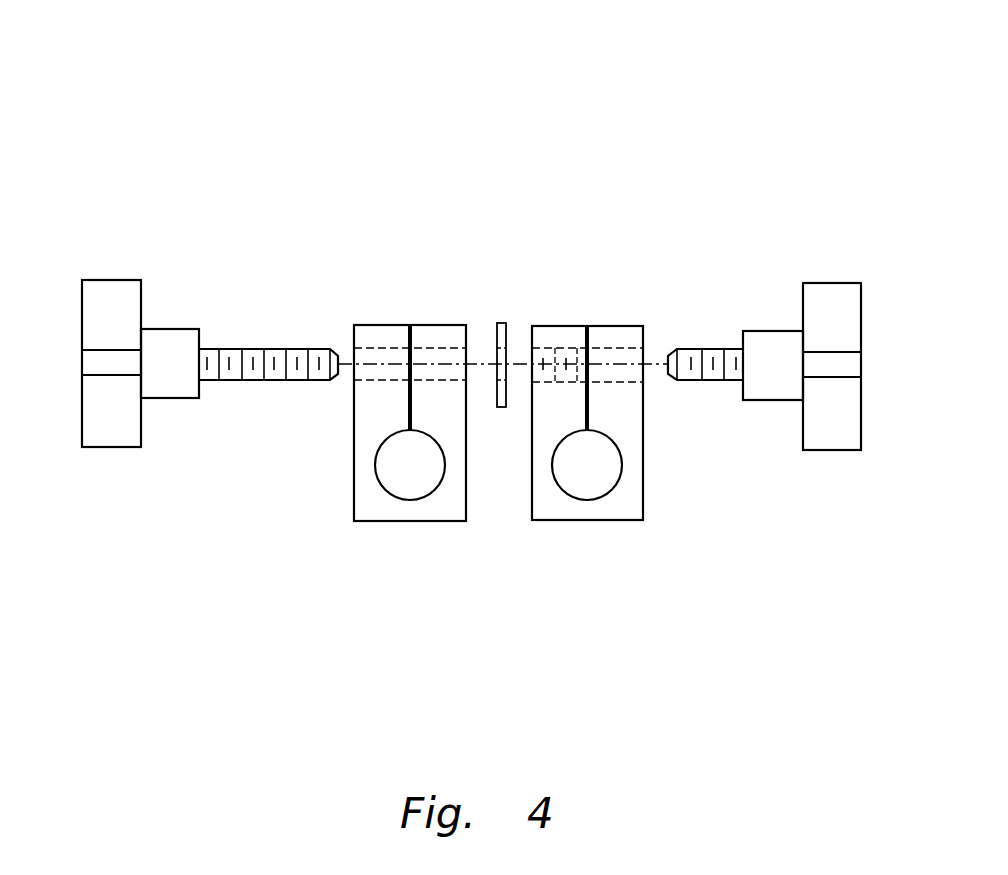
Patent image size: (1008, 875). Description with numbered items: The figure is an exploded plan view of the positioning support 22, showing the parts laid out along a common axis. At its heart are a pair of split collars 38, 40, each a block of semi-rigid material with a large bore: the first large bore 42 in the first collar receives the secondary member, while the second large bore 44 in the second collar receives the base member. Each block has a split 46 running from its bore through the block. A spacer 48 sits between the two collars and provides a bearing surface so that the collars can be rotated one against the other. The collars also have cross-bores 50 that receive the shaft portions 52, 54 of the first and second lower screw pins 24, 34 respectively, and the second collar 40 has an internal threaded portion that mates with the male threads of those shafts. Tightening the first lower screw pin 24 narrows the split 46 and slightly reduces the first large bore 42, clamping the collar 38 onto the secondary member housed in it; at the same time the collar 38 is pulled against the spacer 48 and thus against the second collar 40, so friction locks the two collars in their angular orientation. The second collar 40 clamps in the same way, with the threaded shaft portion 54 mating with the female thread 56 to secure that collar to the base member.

The positioning support 22 is at (470, 157).
The first lower screw pin 24 is at (135, 448).
The second lower screw pin 34 is at (828, 282).
The first split collar 38 is at (353, 467).
The second split collar 40 is at (644, 437).
The first large bore 42 is at (435, 490).
The second large bore 44 is at (560, 490).
The split 46 is at (411, 327).
The spacer 48 is at (497, 323).
The cross-bores 50 is at (379, 348).
The shaft portion 52 is at (300, 348).
The shaft portion 54 is at (712, 382).
The female thread 56 is at (563, 348).